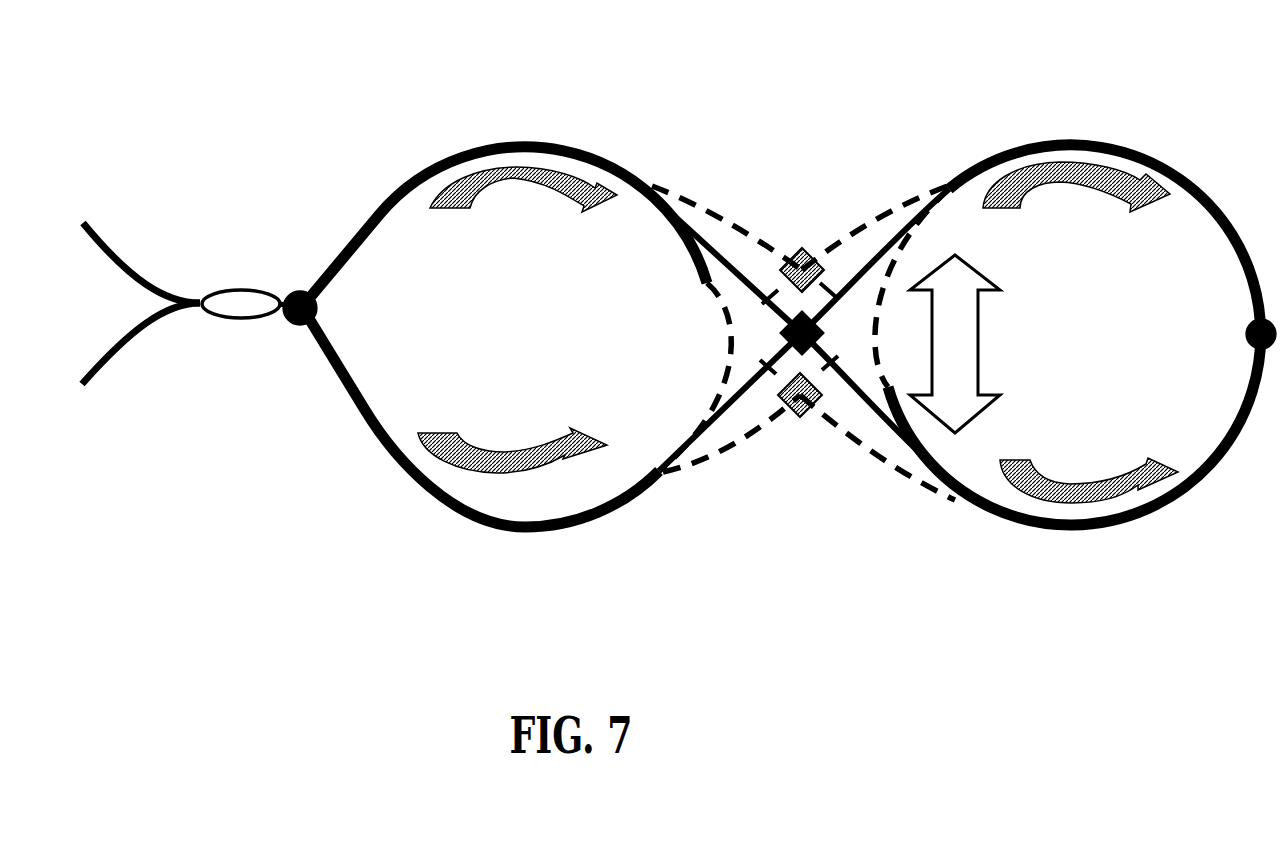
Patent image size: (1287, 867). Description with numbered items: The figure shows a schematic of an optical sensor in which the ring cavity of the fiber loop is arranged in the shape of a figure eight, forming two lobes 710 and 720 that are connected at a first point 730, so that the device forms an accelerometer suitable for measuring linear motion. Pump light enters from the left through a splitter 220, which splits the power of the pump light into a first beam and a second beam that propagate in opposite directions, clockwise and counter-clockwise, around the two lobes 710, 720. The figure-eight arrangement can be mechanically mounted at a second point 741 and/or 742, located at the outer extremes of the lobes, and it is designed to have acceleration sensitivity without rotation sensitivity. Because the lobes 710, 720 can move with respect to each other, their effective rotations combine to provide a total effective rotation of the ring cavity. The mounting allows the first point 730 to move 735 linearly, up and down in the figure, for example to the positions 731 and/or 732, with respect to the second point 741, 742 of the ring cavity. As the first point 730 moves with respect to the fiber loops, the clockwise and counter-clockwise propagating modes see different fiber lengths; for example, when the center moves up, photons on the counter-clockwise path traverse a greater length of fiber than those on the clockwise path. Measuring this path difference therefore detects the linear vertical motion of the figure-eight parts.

The splitter 220 is at (233, 290).
The lobe 710 is at (540, 143).
The lobe 720 is at (1012, 152).
The first point 730 is at (785, 333).
The position 731 is at (805, 248).
The position 732 is at (800, 418).
The linear movement 735 is at (980, 337).
The second point 741 is at (1261, 334).
The second point 742 is at (300, 295).